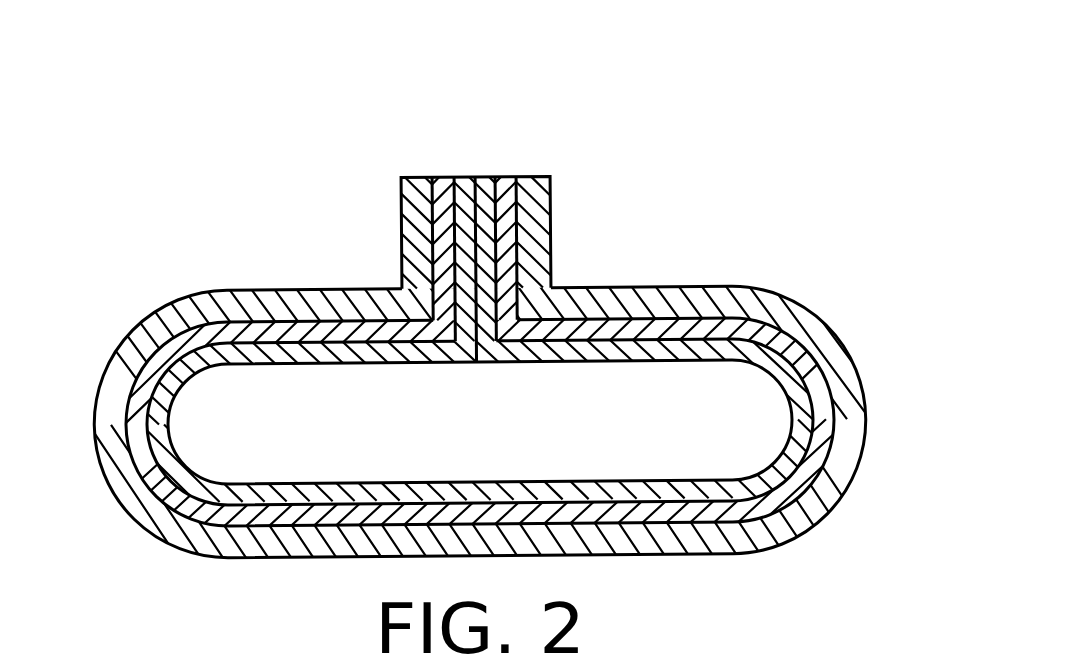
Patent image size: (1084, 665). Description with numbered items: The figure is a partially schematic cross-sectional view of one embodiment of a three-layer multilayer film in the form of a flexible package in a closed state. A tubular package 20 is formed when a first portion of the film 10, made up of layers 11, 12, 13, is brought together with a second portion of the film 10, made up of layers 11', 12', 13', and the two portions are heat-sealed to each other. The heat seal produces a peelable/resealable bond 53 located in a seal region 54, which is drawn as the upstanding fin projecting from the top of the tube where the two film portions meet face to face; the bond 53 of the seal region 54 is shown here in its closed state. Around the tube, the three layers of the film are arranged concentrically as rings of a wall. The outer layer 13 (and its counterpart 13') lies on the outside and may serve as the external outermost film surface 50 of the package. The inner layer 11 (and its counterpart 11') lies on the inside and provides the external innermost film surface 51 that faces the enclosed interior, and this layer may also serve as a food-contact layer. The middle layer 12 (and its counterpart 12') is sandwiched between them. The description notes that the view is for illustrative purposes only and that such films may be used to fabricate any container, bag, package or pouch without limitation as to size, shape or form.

The film 10 is at (740, 287).
The layer 11 is at (507, 187).
The layer 11' is at (438, 179).
The layer 12 is at (542, 197).
The layer 12' is at (394, 213).
The layer 13 is at (561, 211).
The layer 13' is at (373, 233).
The tubular package 20 is at (278, 282).
The external outermost film surface 50 is at (152, 312).
The external innermost film surface 51 is at (695, 363).
The peelable/resealable bond 53 is at (497, 342).
The seal region 54 is at (560, 235).